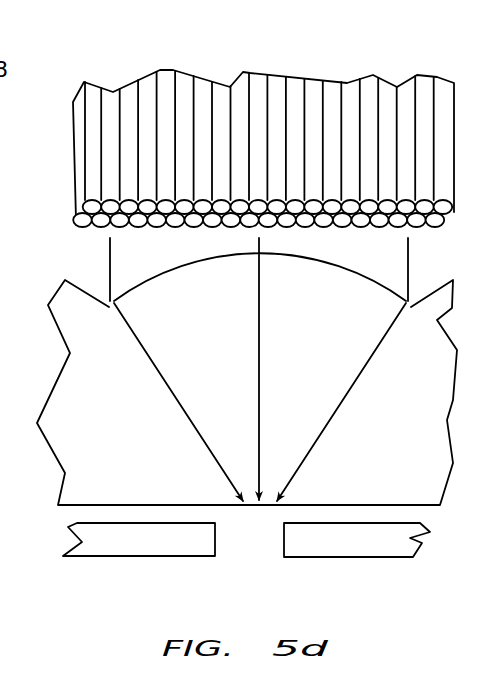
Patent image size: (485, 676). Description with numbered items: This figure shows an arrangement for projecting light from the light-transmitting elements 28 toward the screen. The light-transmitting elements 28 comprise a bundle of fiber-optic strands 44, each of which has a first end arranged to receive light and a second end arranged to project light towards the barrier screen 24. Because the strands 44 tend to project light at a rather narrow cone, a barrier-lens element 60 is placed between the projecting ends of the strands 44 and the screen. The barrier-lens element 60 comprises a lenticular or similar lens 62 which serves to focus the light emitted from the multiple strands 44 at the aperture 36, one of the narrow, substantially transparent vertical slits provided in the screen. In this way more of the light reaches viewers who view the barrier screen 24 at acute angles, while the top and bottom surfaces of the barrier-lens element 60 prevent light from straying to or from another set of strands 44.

The light-transmitting elements 28 is at (421, 71).
The fiber-optic strands 44 is at (437, 228).
The barrier-lens element 60 is at (49, 454).
The lenticular lens 62 is at (152, 280).
The aperture 36 is at (241, 554).
The barrier screen 24 is at (366, 564).